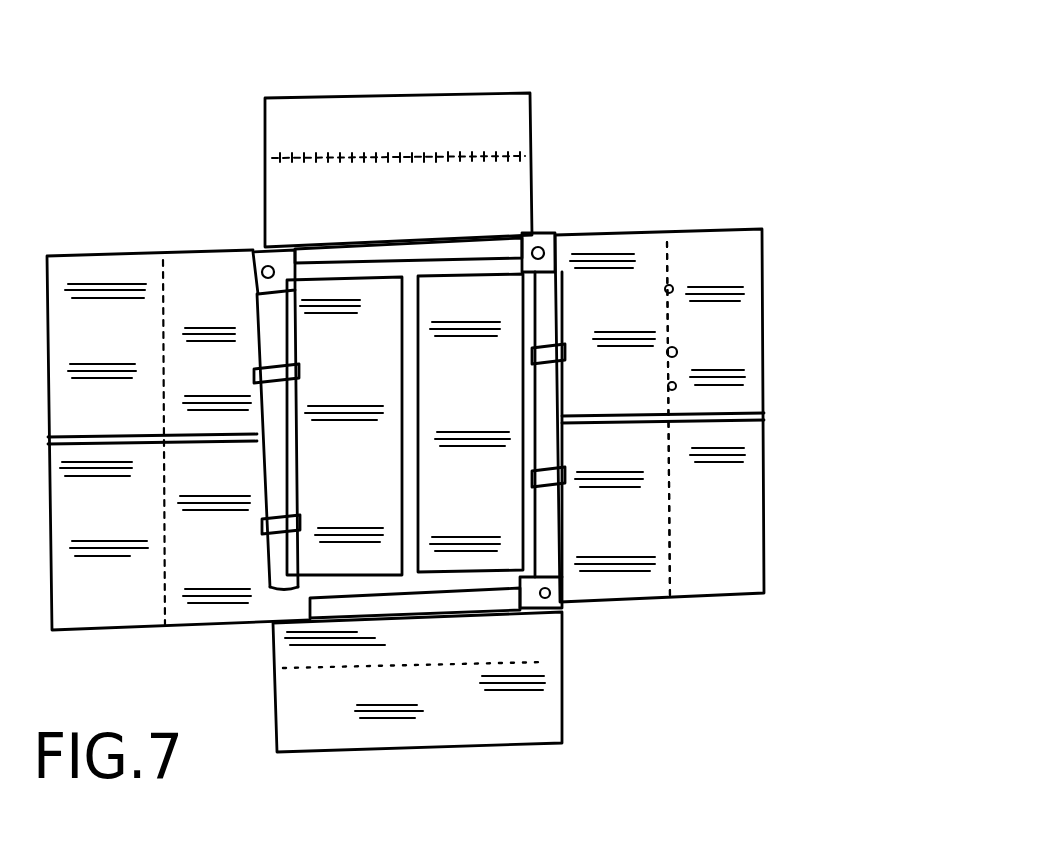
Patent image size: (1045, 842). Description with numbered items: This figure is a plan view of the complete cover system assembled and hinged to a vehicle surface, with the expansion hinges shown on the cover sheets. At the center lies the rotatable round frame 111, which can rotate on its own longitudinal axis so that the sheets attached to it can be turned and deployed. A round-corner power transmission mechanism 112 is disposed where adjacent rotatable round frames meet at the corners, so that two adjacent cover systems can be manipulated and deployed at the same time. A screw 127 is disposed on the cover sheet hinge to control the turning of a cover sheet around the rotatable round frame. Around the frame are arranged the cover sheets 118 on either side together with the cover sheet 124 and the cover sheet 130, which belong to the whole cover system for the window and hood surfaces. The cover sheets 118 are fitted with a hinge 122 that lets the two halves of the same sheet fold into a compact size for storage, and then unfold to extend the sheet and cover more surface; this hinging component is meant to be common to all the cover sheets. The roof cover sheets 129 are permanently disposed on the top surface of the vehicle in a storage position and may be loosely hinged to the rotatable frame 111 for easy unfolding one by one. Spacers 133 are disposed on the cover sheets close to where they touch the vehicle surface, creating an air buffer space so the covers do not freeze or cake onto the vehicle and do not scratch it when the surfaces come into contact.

The rotatable round frame 111 is at (443, 248).
The round-corner power transmission mechanism 112 is at (263, 260).
The cover sheets 118 is at (102, 277).
The hinge 122 is at (678, 317).
The cover sheet 124 is at (283, 135).
The screw 127 is at (560, 288).
The roof cover sheets 129 is at (492, 493).
The cover sheet 130 is at (527, 718).
The spacers 133 is at (678, 354).